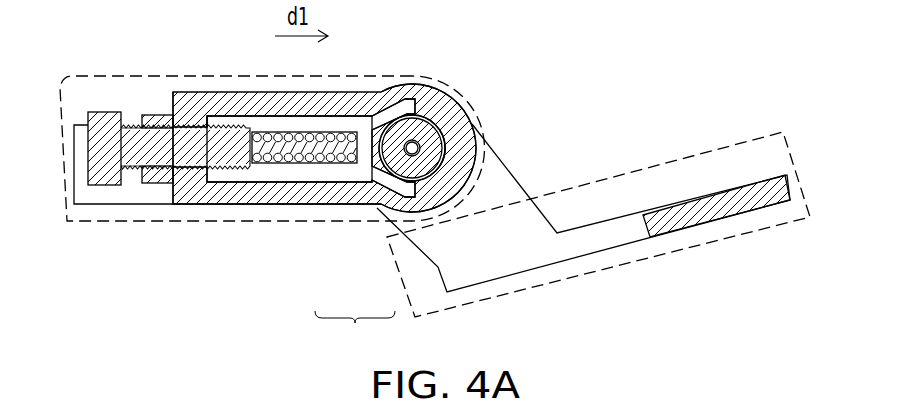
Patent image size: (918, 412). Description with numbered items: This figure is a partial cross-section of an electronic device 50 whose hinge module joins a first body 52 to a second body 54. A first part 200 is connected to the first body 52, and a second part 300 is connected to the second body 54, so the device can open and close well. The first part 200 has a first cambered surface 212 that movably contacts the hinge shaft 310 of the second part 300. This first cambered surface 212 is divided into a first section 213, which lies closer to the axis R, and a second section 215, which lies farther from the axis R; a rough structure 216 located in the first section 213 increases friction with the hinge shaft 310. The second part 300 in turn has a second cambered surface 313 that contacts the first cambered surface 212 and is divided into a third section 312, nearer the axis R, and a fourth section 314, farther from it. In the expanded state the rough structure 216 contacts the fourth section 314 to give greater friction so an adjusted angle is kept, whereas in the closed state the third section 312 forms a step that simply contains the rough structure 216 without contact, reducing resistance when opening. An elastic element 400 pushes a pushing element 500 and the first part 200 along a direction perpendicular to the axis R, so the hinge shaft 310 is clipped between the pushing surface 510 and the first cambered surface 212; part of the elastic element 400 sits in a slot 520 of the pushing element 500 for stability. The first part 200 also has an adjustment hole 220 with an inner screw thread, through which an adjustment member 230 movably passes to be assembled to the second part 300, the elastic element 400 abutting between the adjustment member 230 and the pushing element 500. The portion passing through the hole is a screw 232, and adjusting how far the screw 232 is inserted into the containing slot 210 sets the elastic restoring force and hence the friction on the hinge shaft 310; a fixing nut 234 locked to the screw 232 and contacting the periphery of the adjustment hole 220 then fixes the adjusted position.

The electronic device 50 is at (757, 315).
The first body 52 is at (138, 77).
The second body 54 is at (693, 149).
The first part 200 is at (207, 195).
The containing slot 210 is at (240, 108).
The first cambered surface 212 is at (545, 90).
The first section 213 is at (425, 145).
The second section 215 is at (428, 138).
The rough structure 216 is at (445, 160).
The adjustment hole 220 is at (189, 93).
The adjustment member 230 is at (97, 186).
The screw 232 is at (132, 181).
The fixing nut 234 is at (160, 184).
The second part 300 is at (528, 258).
The hinge shaft 310 is at (418, 171).
The third section 312 is at (352, 190).
The second cambered surface 313 is at (355, 331).
The fourth section 314 is at (368, 205).
The elastic element 400 is at (257, 170).
The pushing element 500 is at (288, 126).
The pushing surface 510 is at (418, 86).
The slot 520 is at (302, 180).
The axis R is at (382, 130).